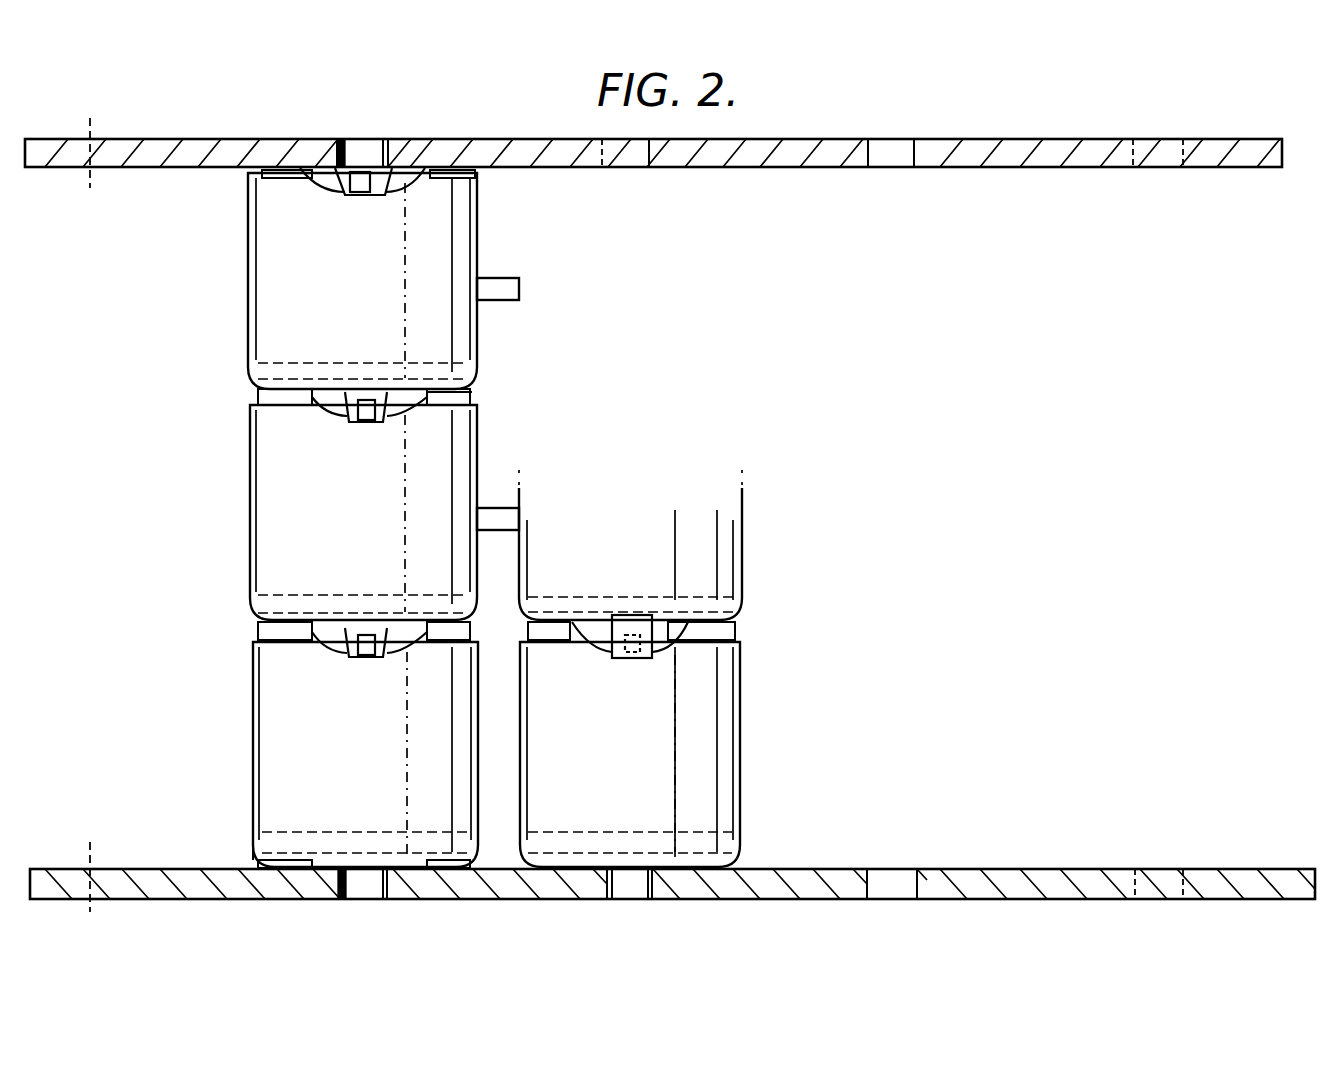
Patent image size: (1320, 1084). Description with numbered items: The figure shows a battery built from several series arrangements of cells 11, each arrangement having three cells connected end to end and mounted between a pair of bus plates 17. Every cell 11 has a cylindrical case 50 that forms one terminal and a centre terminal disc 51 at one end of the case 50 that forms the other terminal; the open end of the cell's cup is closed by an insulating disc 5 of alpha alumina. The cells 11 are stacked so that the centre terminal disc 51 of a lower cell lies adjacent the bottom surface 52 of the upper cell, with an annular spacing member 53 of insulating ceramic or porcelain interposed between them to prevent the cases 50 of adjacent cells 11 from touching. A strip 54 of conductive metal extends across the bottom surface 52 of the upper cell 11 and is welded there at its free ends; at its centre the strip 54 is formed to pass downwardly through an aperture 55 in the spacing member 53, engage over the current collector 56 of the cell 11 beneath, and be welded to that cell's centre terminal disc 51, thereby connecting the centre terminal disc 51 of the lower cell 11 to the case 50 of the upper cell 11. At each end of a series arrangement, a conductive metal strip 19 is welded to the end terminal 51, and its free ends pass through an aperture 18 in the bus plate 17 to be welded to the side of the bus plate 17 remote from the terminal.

The cell 11 is at (629, 768).
The bus plate 17 is at (1015, 150).
The aperture 18 is at (355, 160).
The conductive metal strip 19 is at (326, 138).
The insulating disc 5 is at (458, 400).
The cylindrical case 50 is at (253, 768).
The centre terminal disc 51 is at (372, 195).
The bottom surface 52 is at (262, 622).
The annular spacing member 53 is at (262, 646).
The strip 54 is at (300, 400).
The aperture 55 is at (392, 655).
The current collector 56 is at (348, 182).